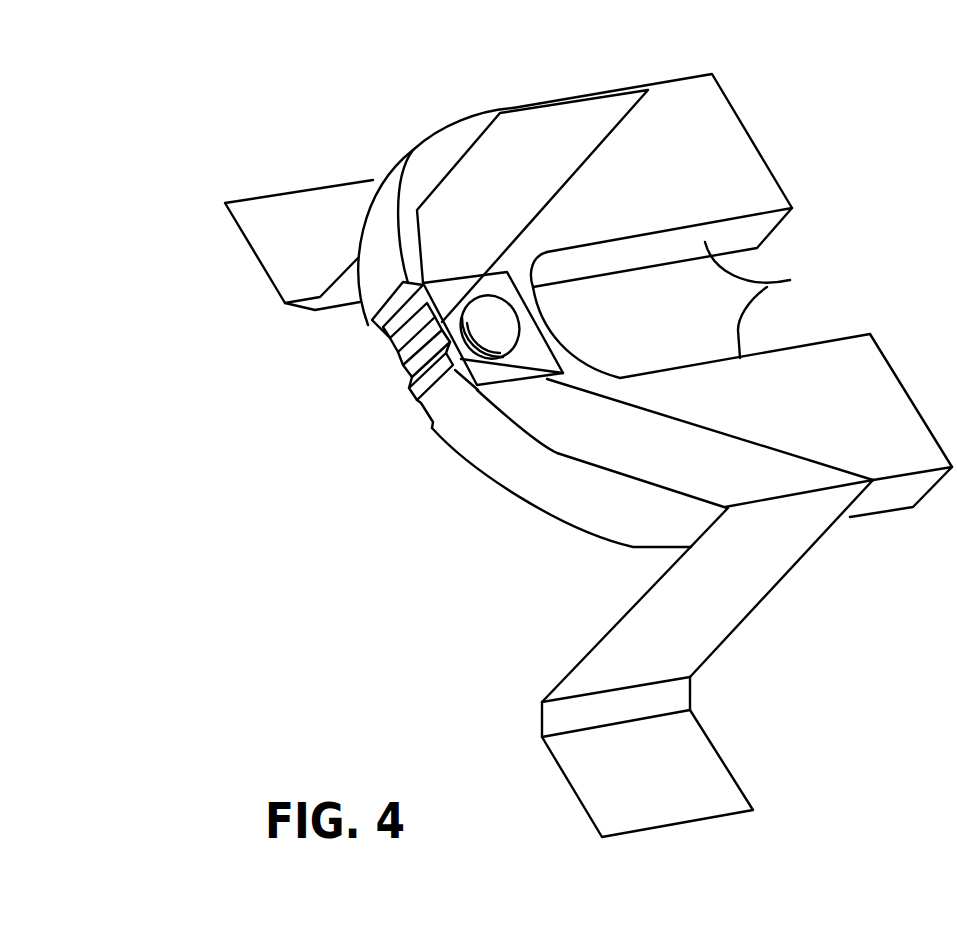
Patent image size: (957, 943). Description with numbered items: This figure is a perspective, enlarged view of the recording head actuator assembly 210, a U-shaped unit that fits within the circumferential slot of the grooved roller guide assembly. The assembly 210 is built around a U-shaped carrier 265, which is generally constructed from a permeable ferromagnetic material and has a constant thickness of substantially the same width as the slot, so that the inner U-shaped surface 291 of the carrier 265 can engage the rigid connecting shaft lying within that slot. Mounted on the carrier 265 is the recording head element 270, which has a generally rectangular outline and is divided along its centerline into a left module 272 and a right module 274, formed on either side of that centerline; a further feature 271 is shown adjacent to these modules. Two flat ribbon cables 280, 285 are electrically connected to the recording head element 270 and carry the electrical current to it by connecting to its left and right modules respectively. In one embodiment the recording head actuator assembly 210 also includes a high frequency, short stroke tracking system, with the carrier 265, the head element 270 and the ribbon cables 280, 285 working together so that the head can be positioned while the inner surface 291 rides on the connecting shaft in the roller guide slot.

The recording head actuator assembly 210 is at (462, 31).
The U-shaped carrier 265 is at (703, 166).
The recording head element 270 is at (385, 412).
The middle tooth 271 is at (385, 379).
The left module 272 is at (385, 337).
The right module 274 is at (423, 410).
The ribbon cable 280 is at (702, 627).
The ribbon cable 285 is at (493, 193).
The inner U-shaped surface 291 is at (777, 300).